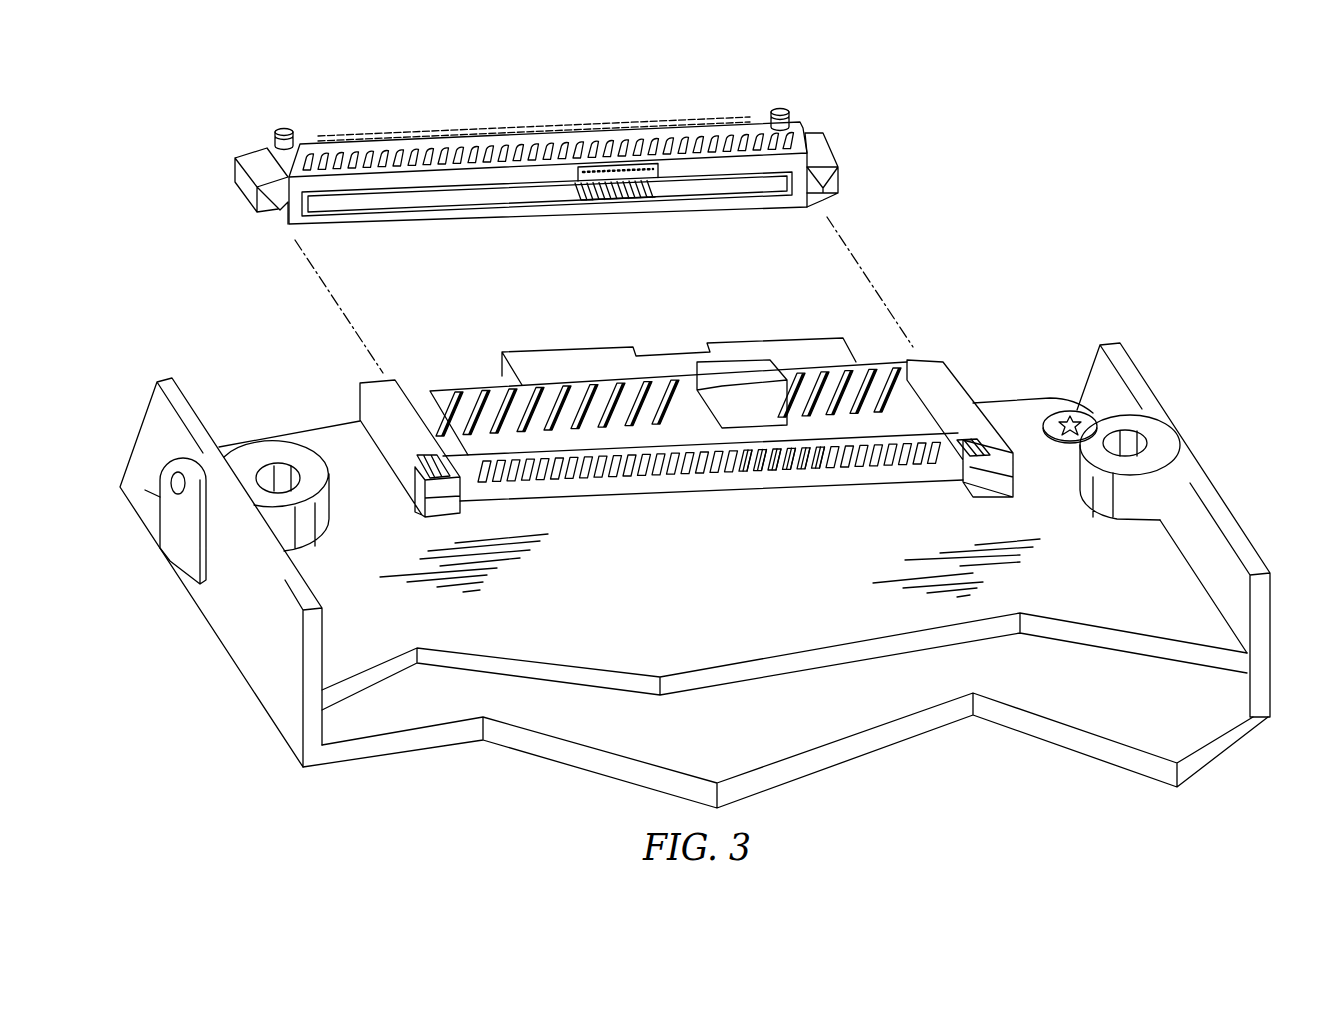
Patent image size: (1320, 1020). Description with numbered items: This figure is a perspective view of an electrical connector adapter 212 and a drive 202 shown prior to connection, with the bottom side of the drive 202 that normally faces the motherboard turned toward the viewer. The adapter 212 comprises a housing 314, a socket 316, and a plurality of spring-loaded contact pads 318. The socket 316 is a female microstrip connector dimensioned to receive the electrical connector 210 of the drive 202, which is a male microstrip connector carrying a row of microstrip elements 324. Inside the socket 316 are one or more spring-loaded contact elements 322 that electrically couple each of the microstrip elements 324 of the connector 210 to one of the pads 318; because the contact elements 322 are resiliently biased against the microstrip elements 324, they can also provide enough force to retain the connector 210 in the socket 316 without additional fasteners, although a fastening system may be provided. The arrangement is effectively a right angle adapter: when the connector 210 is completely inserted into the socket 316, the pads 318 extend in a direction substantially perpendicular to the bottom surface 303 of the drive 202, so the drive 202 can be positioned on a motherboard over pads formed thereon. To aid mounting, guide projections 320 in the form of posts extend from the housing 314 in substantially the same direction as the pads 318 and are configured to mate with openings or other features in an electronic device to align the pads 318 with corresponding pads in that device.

The drive 202 is at (650, 397).
The electrical connector 210 is at (686, 427).
The electrical connector adapter 212 is at (587, 202).
The bottom surface 303 is at (350, 645).
The housing 314 is at (851, 142).
The socket 316 is at (418, 247).
The spring-loaded contact pads 318 is at (622, 122).
The guide projections 320 is at (265, 119).
The spring-loaded contact elements 322 is at (573, 212).
The microstrip elements 324 is at (653, 362).